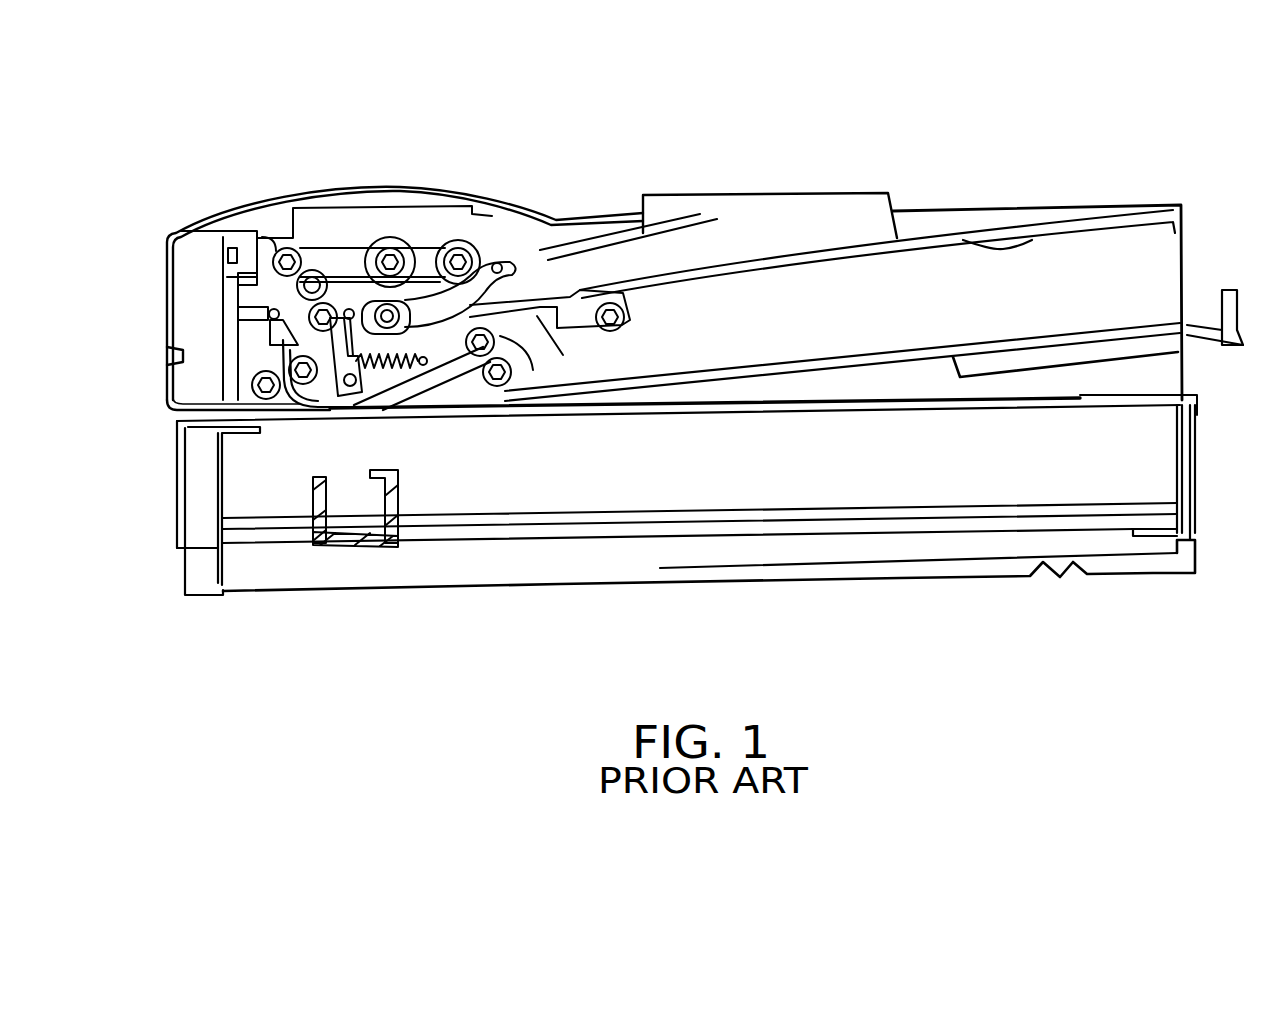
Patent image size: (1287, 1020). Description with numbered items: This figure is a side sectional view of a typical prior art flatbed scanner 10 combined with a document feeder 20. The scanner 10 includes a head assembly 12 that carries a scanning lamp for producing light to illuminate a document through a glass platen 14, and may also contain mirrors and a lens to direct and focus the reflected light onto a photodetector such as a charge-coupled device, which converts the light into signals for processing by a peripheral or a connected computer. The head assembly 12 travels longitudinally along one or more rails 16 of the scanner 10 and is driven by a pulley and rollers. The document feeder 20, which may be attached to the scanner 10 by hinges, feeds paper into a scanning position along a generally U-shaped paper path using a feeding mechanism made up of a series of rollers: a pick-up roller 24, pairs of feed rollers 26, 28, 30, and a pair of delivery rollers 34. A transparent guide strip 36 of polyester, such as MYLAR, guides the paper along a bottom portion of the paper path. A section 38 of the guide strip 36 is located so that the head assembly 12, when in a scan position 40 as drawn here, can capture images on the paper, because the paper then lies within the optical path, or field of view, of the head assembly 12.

The scanner 10 is at (472, 612).
The head assembly 12 is at (310, 547).
The glass platen 14 is at (1020, 407).
The rails 16 is at (731, 514).
The document feeder 20 is at (892, 166).
The pick-up roller 24 is at (536, 212).
The feed rollers 26 is at (337, 298).
The feed rollers 28 is at (404, 250).
The feed rollers 30 is at (262, 372).
The delivery rollers 34 is at (507, 343).
The guide strip 36 is at (315, 412).
The section of guide strip 38 is at (317, 405).
The scan position 40 is at (312, 555).